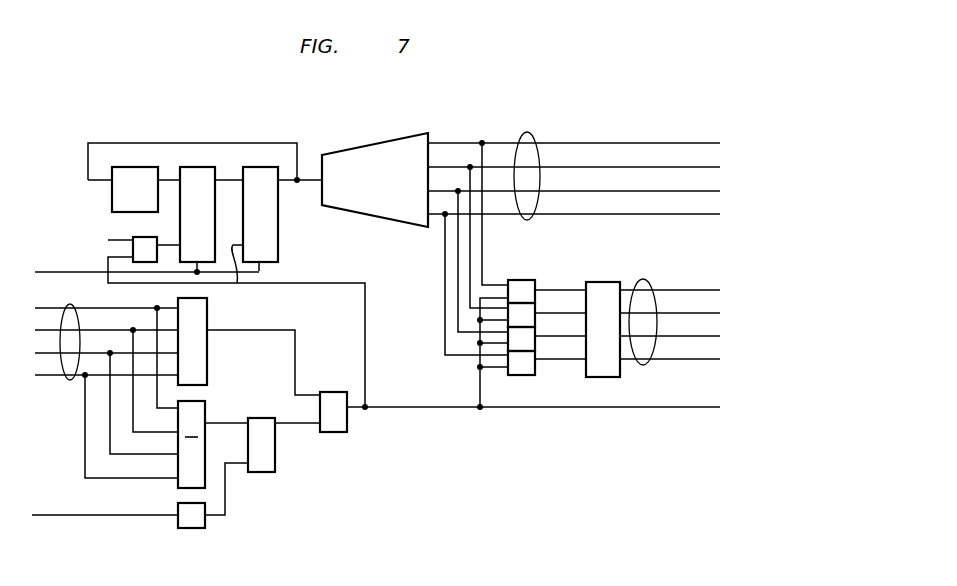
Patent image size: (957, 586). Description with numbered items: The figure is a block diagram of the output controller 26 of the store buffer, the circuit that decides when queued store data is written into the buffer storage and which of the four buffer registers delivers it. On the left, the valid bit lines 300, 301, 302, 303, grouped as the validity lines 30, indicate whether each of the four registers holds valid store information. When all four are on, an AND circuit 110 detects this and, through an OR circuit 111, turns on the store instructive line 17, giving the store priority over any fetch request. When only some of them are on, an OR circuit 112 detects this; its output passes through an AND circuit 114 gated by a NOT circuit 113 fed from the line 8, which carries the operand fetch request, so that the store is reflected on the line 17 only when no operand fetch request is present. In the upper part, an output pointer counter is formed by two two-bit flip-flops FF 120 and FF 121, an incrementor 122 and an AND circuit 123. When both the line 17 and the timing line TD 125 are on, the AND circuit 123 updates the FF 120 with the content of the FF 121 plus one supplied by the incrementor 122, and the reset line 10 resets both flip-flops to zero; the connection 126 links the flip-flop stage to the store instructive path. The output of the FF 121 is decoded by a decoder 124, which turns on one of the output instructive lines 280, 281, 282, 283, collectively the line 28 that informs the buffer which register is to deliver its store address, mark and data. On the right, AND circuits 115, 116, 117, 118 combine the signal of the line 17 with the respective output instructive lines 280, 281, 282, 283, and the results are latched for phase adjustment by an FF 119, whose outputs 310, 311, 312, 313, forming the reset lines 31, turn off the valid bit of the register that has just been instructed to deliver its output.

The output controller 26 is at (189, 100).
The incrementor 122 is at (140, 167).
The FF 120 is at (197, 167).
The FF 121 is at (261, 167).
The AND circuit 123 is at (135, 238).
The timing line TD 125 is at (120, 240).
The reset line 10 is at (70, 272).
The connecting line 126 is at (236, 326).
The decoder 124 is at (352, 149).
The line 28 is at (527, 132).
The output instructive line 280 is at (588, 143).
The output instructive line 281 is at (588, 167).
The output instructive line 282 is at (588, 191).
The output instructive line 283 is at (588, 214).
The AND circuit 110 is at (207, 311).
The valid bit line 300 is at (60, 308).
The valid bit line 301 is at (60, 330).
The valid bit line 302 is at (60, 353).
The valid bit line 303 is at (60, 375).
The lines 30 is at (69, 380).
The OR circuit 112 is at (206, 412).
The AND circuit 114 is at (262, 472).
The NOT circuit 113 is at (203, 528).
The line 8 is at (80, 515).
The OR circuit 111 is at (333, 392).
The store instructive line 17 is at (635, 407).
The AND circuit 115 is at (540, 290).
The AND circuit 116 is at (540, 314).
The AND circuit 117 is at (540, 337).
The AND circuit 118 is at (540, 361).
The FF 119 is at (606, 282).
The reset lines 31 is at (648, 280).
The output of the FF 119 310 is at (658, 290).
The output of the FF 119 311 is at (658, 313).
The output of the FF 119 312 is at (658, 336).
The output of the FF 119 313 is at (658, 359).